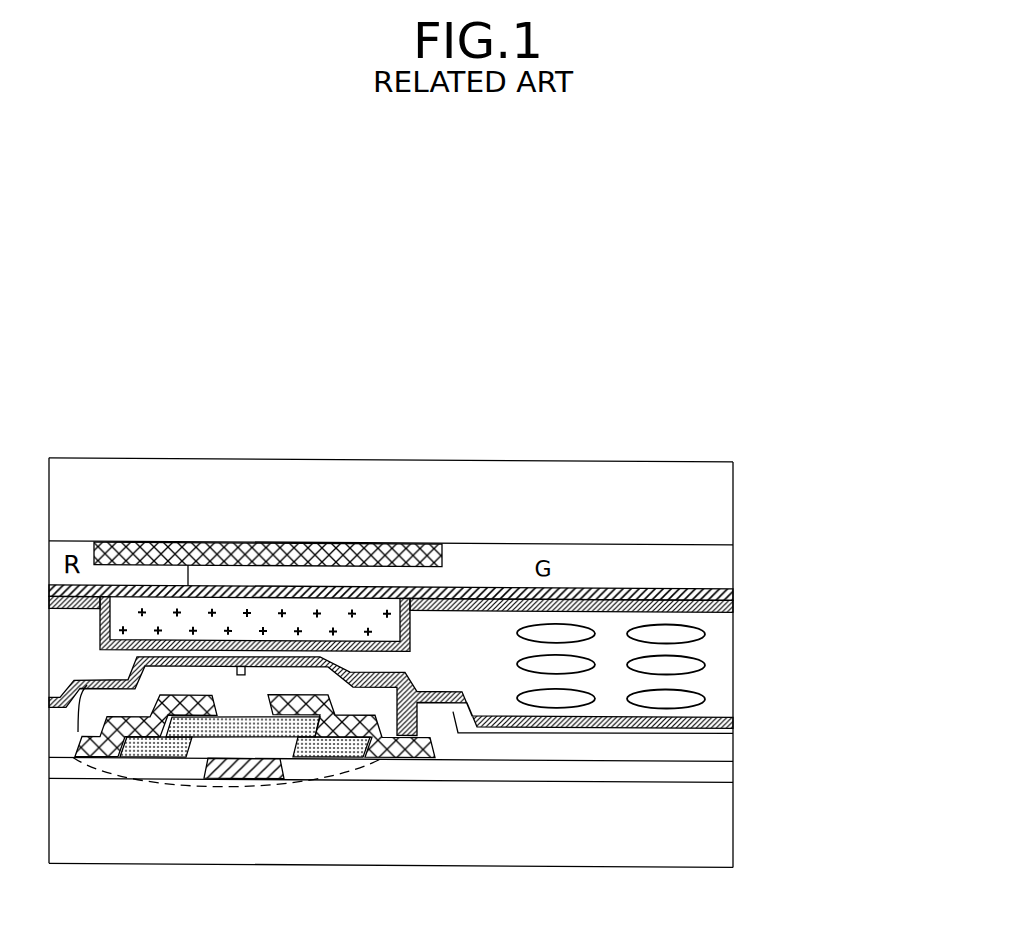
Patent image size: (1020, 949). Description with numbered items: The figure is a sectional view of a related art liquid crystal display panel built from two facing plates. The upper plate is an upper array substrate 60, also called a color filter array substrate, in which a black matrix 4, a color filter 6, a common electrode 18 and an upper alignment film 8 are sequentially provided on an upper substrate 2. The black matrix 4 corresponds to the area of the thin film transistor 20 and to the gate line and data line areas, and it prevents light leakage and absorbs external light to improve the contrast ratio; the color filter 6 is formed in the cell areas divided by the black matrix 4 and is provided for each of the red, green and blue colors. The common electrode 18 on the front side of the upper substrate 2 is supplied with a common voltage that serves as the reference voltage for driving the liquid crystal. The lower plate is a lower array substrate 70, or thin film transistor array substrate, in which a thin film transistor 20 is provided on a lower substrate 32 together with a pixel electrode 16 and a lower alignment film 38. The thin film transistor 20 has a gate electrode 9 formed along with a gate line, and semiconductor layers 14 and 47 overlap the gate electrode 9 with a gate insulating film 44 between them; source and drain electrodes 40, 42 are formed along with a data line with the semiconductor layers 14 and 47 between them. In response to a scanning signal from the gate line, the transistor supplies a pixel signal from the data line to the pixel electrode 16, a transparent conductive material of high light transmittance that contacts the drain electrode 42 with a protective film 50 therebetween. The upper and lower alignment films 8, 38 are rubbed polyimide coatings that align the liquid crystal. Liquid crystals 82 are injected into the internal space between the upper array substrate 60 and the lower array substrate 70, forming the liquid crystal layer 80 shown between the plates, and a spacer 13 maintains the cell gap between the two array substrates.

The upper substrate 2 is at (733, 504).
The black matrix 4 is at (236, 540).
The color filter 6 is at (733, 558).
The upper alignment film 8 is at (733, 603).
The gate electrode 9 is at (240, 777).
The spacer 13 is at (410, 620).
The semiconductor layer 14 is at (168, 757).
The pixel electrode 16 is at (733, 729).
The common electrode 18 is at (733, 588).
The thin film transistor 20 is at (262, 790).
The lower substrate 32 is at (730, 800).
The lower alignment film 38 is at (733, 719).
The source electrode 40 is at (92, 757).
The drain electrode 42 is at (313, 758).
The gate insulating film 44 is at (477, 765).
The semiconductor layer 47 is at (378, 750).
The protective film 50 is at (728, 748).
The upper array substrate 60 is at (833, 458).
The lower array substrate 70 is at (832, 715).
The liquid crystal layer 80 is at (735, 612).
The liquid crystals 82 is at (666, 696).